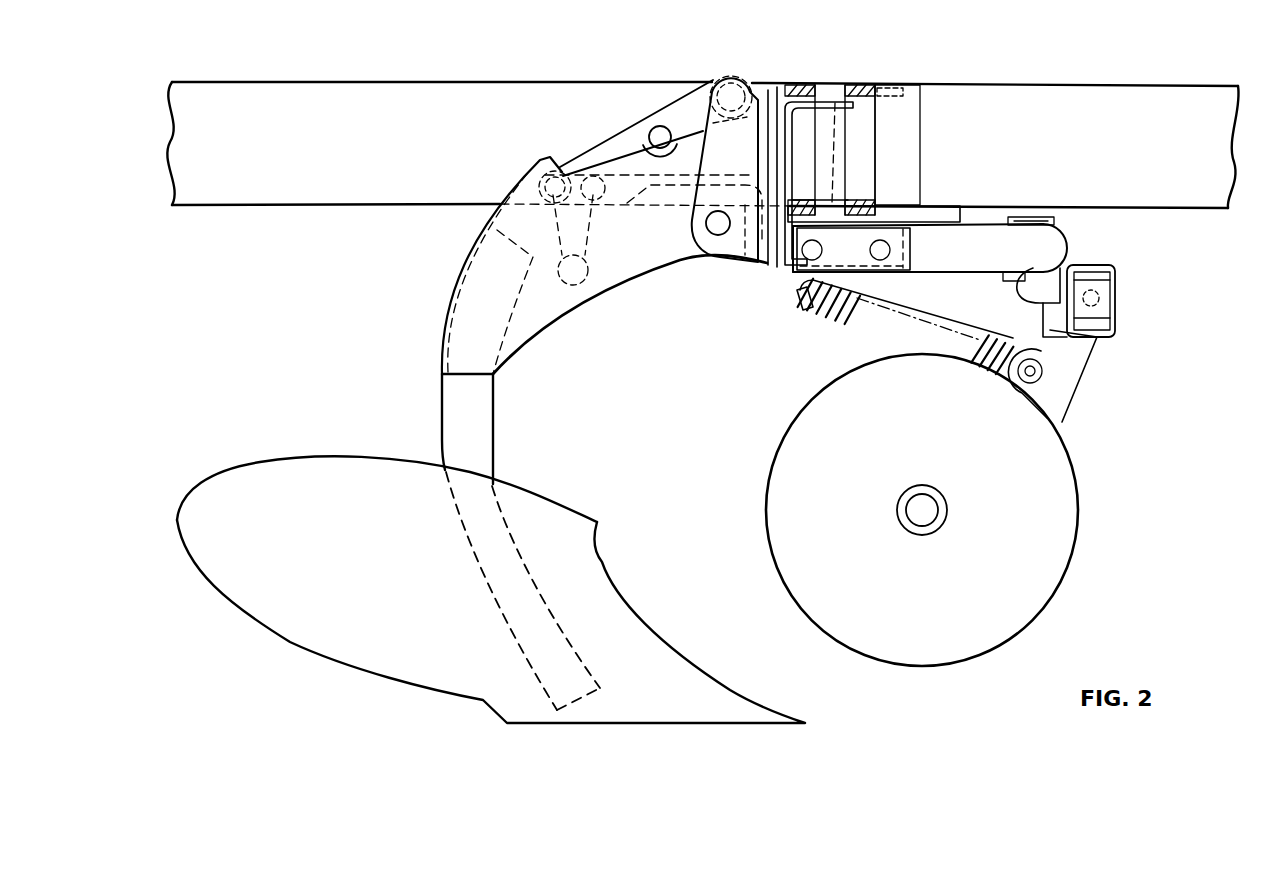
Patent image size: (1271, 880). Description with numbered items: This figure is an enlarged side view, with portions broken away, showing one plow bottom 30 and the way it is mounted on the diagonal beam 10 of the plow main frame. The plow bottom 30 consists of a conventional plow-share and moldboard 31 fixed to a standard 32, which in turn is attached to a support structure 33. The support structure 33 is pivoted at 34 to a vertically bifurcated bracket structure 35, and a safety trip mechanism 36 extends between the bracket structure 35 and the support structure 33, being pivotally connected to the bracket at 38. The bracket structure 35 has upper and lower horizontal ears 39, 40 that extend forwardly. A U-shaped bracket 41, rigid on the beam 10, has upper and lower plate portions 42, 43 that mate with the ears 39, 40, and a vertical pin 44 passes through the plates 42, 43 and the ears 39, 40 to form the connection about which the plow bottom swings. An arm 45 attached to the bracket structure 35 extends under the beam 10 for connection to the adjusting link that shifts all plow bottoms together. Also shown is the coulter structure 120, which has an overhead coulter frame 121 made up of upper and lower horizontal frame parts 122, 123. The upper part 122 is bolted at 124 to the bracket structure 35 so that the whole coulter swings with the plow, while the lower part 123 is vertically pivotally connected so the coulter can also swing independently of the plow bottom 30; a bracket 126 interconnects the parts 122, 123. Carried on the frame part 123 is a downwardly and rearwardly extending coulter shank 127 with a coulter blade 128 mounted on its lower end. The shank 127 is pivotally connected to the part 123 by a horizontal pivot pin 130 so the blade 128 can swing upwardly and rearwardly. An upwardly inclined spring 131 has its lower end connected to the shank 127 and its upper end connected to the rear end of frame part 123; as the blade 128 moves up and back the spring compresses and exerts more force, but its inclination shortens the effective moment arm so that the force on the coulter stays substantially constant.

The beam 10 is at (1195, 102).
The plow bottom 30 is at (603, 562).
The plow-share and moldboard 31 is at (314, 462).
The standard 32 is at (480, 420).
The support structure 33 is at (540, 313).
The pivot 34 is at (718, 228).
The bifurcated bracket structure 35 is at (735, 169).
The safety trip mechanism 36 is at (606, 152).
The pivot connection 38 is at (722, 80).
The upper horizontal ear 39 is at (910, 101).
The lower horizontal ear 40 is at (845, 190).
The U-shaped bracket 41 is at (908, 122).
The upper plate portion 42 is at (866, 86).
The lower plate portion 43 is at (873, 207).
The vertical pin 44 is at (847, 151).
The arm 45 is at (907, 224).
The coulter structure 120 is at (977, 451).
The overhead coulter frame 121 is at (946, 238).
The upper horizontal frame part 122 is at (986, 245).
The lower horizontal frame part 123 is at (903, 288).
The bolt connection 124 is at (806, 251).
The bracket 126 is at (1046, 300).
The coulter shank 127 is at (1068, 370).
The coulter blade 128 is at (1040, 578).
The horizontal pivot pin 130 is at (1107, 293).
The spring 131 is at (956, 342).